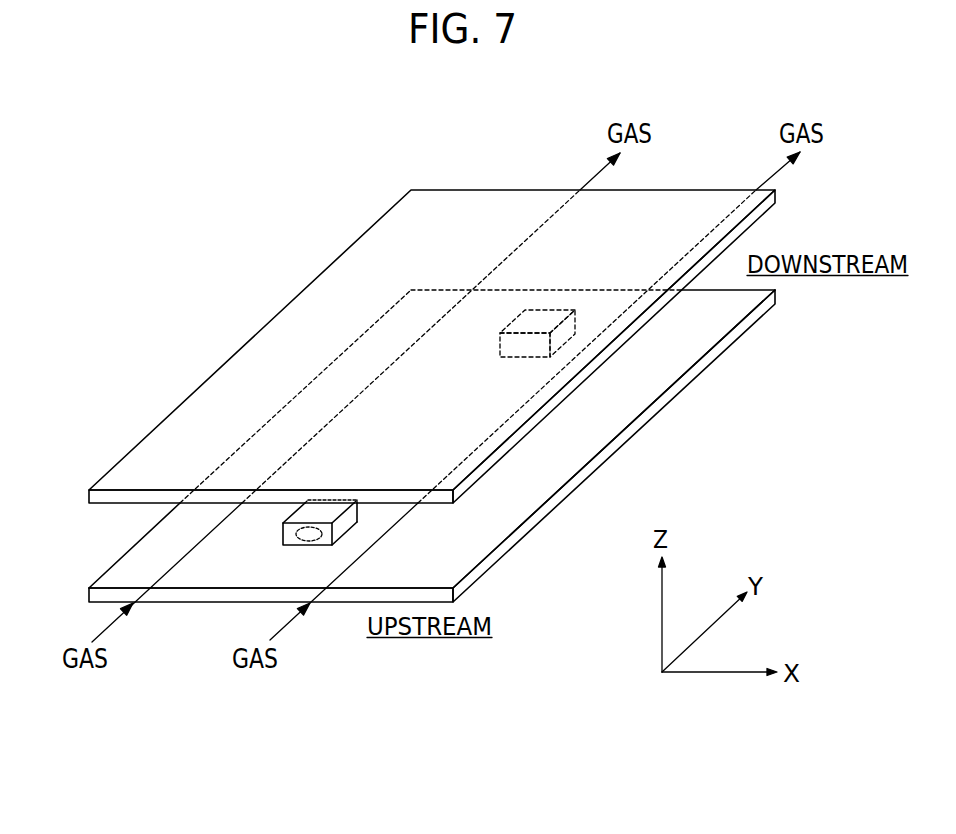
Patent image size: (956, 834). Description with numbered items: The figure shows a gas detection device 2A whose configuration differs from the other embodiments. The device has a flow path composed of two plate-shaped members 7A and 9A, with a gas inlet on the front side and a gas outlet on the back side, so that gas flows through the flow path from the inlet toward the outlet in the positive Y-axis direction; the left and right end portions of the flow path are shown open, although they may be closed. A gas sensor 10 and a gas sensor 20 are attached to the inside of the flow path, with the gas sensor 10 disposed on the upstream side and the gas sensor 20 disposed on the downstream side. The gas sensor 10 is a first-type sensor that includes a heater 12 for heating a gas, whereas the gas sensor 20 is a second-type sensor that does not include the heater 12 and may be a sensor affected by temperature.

The gas detection device 2A is at (275, 231).
The plate-shaped member 9A is at (452, 218).
The plate-shaped member 7A is at (658, 413).
The gas sensor 20 is at (548, 308).
The gas sensor 10 is at (282, 532).
The heater 12 is at (294, 546).